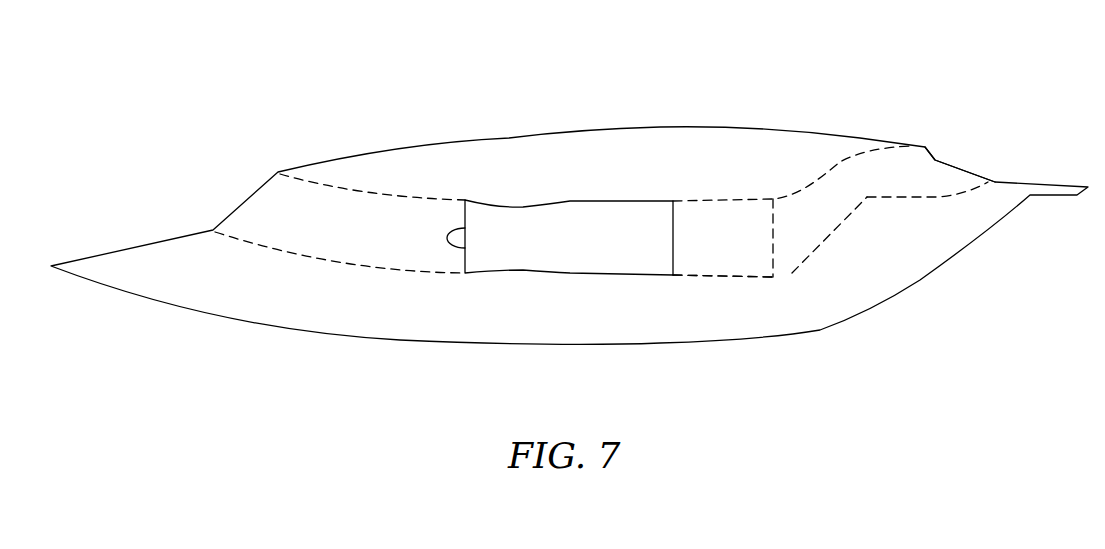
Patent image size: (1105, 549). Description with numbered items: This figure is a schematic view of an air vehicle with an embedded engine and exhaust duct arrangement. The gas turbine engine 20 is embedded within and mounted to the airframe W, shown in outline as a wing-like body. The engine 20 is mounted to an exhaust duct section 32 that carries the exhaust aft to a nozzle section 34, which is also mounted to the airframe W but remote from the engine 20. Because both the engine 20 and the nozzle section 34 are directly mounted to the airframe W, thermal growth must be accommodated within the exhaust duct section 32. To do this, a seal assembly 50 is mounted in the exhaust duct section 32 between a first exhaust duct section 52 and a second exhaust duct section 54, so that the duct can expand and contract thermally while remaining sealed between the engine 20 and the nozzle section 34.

The airframe W is at (509, 139).
The gas turbine engine 20 is at (593, 202).
The exhaust duct section 32 is at (774, 190).
The nozzle section 34 is at (936, 157).
The seal assembly 50 is at (775, 252).
The first exhaust duct section 52 is at (738, 260).
The second exhaust duct section 54 is at (857, 187).